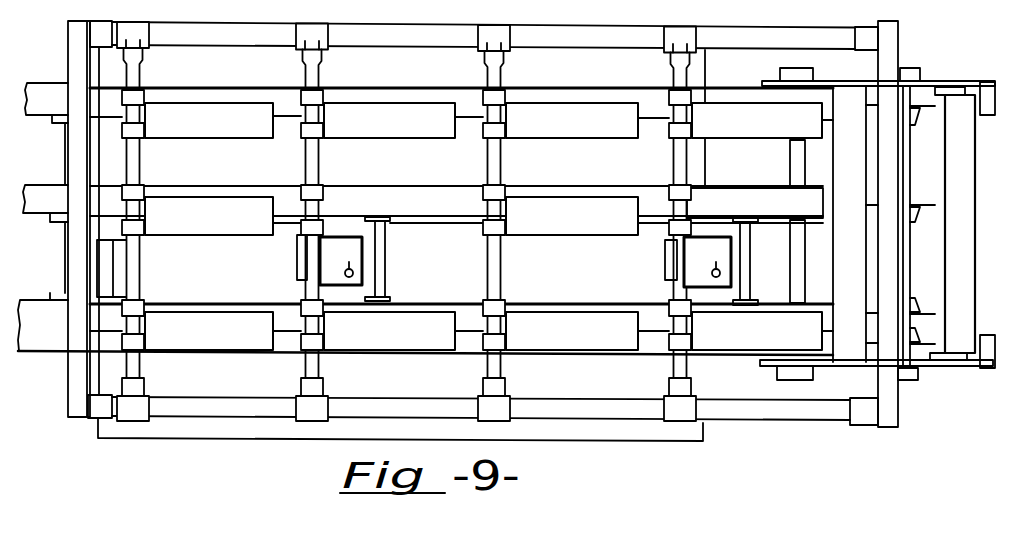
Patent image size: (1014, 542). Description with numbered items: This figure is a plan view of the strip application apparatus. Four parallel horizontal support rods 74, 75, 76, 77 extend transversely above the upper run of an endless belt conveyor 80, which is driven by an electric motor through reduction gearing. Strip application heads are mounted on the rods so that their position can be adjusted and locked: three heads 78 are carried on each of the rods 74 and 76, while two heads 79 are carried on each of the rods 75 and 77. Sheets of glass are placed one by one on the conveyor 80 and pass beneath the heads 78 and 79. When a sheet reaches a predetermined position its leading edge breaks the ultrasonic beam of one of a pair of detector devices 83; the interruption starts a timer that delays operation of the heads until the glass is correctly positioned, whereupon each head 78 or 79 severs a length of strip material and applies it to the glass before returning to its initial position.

The support rod 74 is at (139, 163).
The support rod 75 is at (318, 165).
The support rod 76 is at (501, 165).
The support rod 77 is at (674, 166).
The head 78 is at (391, 226).
The head 79 is at (573, 226).
The endless belt conveyor 80 is at (297, 113).
The detector device 83 is at (298, 268).